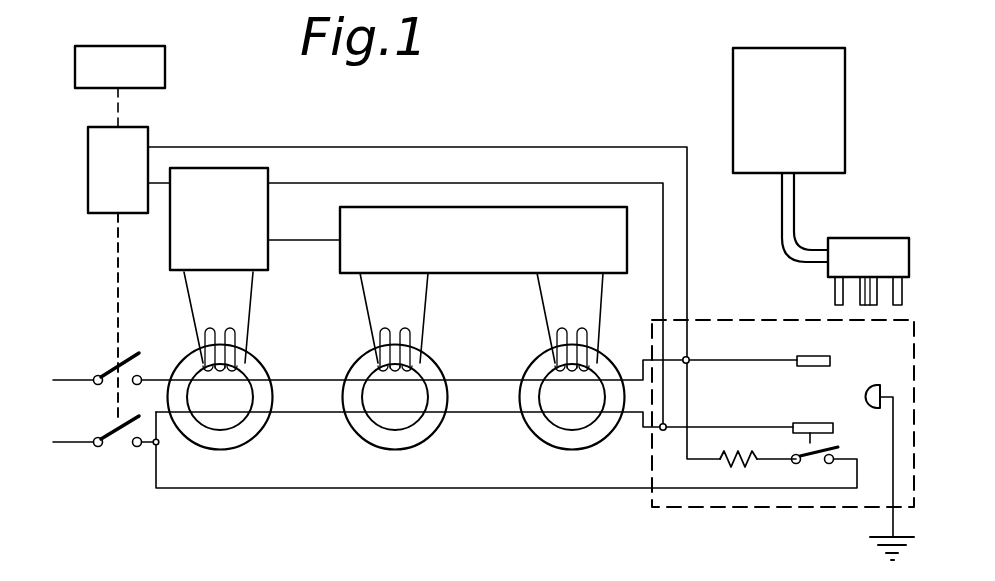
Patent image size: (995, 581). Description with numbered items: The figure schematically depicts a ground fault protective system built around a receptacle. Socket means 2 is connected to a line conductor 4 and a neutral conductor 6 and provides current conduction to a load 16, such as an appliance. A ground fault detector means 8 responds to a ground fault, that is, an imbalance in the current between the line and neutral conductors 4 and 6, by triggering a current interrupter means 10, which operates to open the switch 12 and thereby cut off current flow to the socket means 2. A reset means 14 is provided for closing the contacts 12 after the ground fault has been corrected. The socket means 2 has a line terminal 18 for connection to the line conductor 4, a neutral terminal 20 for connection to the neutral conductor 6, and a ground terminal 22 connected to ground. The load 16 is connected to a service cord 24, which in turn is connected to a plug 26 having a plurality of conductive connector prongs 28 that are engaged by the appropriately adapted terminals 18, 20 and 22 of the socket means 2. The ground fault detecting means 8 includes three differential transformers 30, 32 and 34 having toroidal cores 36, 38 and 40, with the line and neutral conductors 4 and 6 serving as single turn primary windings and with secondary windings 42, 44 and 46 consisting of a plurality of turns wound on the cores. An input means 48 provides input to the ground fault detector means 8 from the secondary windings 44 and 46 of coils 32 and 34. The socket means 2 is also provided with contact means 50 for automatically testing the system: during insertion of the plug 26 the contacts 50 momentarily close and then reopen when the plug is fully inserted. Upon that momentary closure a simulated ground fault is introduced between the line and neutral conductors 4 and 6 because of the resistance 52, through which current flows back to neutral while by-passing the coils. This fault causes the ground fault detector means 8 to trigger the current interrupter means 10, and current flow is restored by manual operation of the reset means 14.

The socket means 2 is at (733, 320).
The line conductor 4 is at (70, 377).
The neutral conductor 6 is at (69, 446).
The ground fault detector means 8 is at (262, 178).
The current interrupter means 10 is at (96, 170).
The switch 12 is at (108, 428).
The reset means 14 is at (150, 47).
The load 16 is at (833, 62).
The line terminal 18 is at (832, 353).
The neutral terminal 20 is at (811, 421).
The ground terminal 22 is at (876, 386).
The service cord 24 is at (793, 200).
The plug 26 is at (884, 246).
The conductive connector prongs 28 is at (832, 291).
The differential transformer 30 is at (228, 452).
The differential transformer 32 is at (405, 454).
The differential transformer 34 is at (575, 454).
The toroidal core 36 is at (259, 420).
The toroidal core 38 is at (433, 423).
The toroidal core 40 is at (606, 428).
The secondary winding 42 is at (221, 327).
The secondary winding 44 is at (392, 327).
The secondary winding 46 is at (570, 327).
The input means 48 is at (472, 249).
The contact means 50 is at (808, 458).
The resistance 52 is at (730, 467).